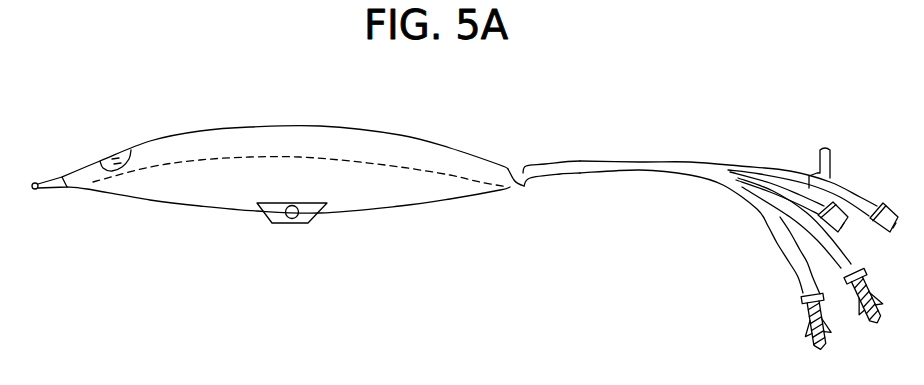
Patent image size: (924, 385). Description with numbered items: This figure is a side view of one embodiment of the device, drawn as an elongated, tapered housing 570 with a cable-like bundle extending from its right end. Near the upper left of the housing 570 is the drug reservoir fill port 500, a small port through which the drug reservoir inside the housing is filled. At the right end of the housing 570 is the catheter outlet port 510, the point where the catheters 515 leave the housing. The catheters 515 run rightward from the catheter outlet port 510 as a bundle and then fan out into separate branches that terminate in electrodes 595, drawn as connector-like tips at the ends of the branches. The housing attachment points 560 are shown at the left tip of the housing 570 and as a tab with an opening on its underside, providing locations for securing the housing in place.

The drug reservoir fill port 500 is at (112, 150).
The housing 570 is at (392, 138).
The catheter outlet port 510 is at (531, 185).
The housing attachment points 560 is at (33, 189).
The electrodes 595 is at (838, 264).
The catheters 515 is at (834, 157).